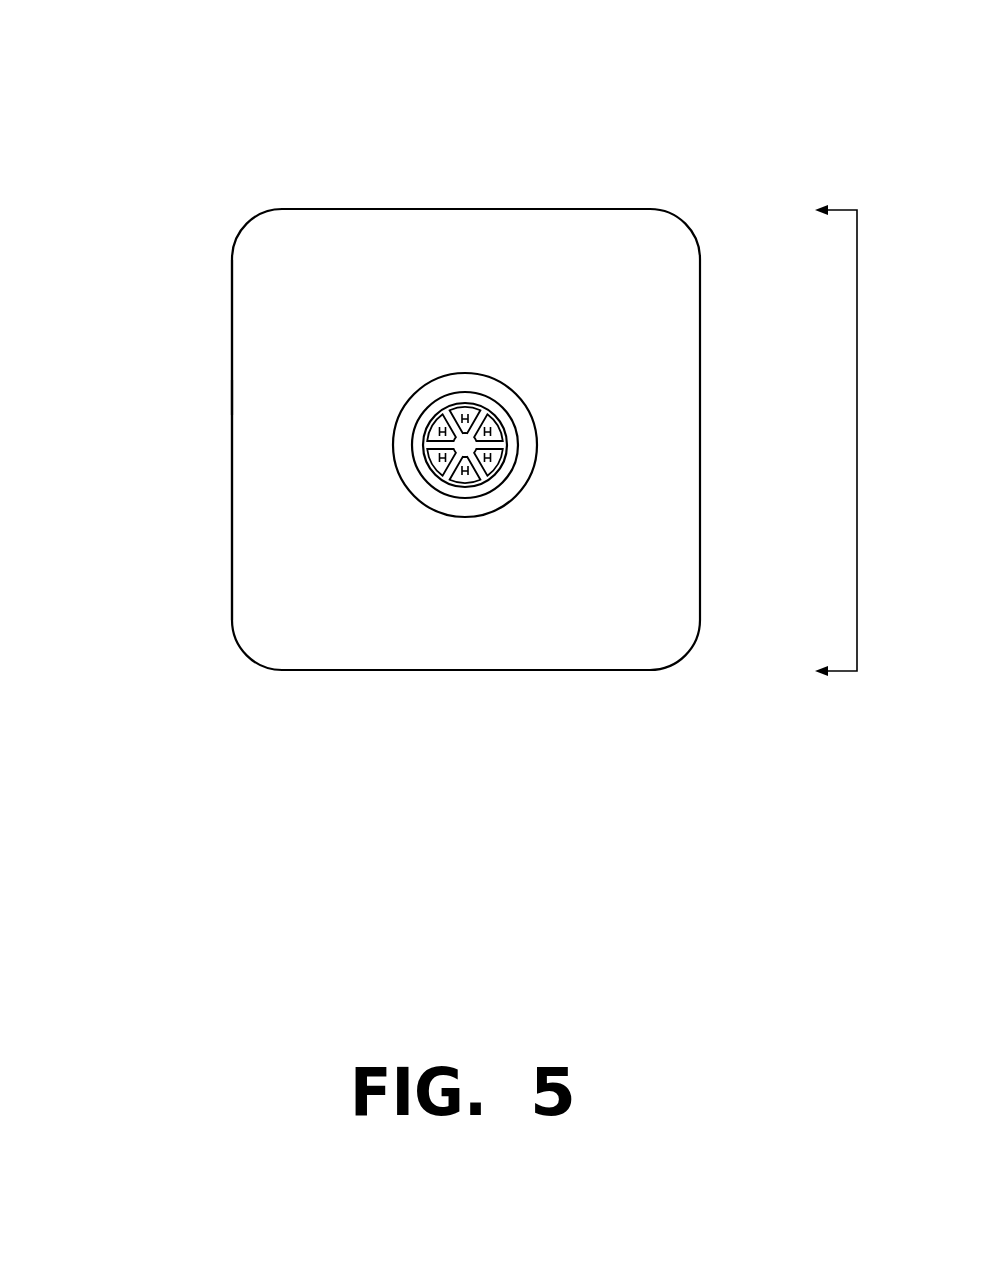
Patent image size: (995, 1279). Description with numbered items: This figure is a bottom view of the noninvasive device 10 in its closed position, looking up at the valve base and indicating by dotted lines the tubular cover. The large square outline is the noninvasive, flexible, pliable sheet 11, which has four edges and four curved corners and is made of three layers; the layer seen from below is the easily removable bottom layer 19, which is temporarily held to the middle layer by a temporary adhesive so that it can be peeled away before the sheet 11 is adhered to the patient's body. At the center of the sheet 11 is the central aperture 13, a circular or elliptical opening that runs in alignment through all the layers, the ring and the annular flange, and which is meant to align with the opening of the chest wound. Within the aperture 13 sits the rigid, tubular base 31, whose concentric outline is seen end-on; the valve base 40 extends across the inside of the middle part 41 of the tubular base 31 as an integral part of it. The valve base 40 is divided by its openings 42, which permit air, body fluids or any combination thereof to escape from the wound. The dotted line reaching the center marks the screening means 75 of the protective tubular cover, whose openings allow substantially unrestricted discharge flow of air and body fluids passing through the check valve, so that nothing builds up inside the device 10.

The noninvasive device 10 is at (840, 440).
The flexible, pliable sheet 11 is at (193, 300).
The central aperture 13 is at (438, 513).
The bottom layer 19 is at (232, 464).
The rigid, tubular base 31 is at (378, 482).
The valve base 40 is at (470, 498).
The middle part 41 is at (487, 458).
The openings 42 is at (497, 462).
The screening means 75 is at (462, 415).